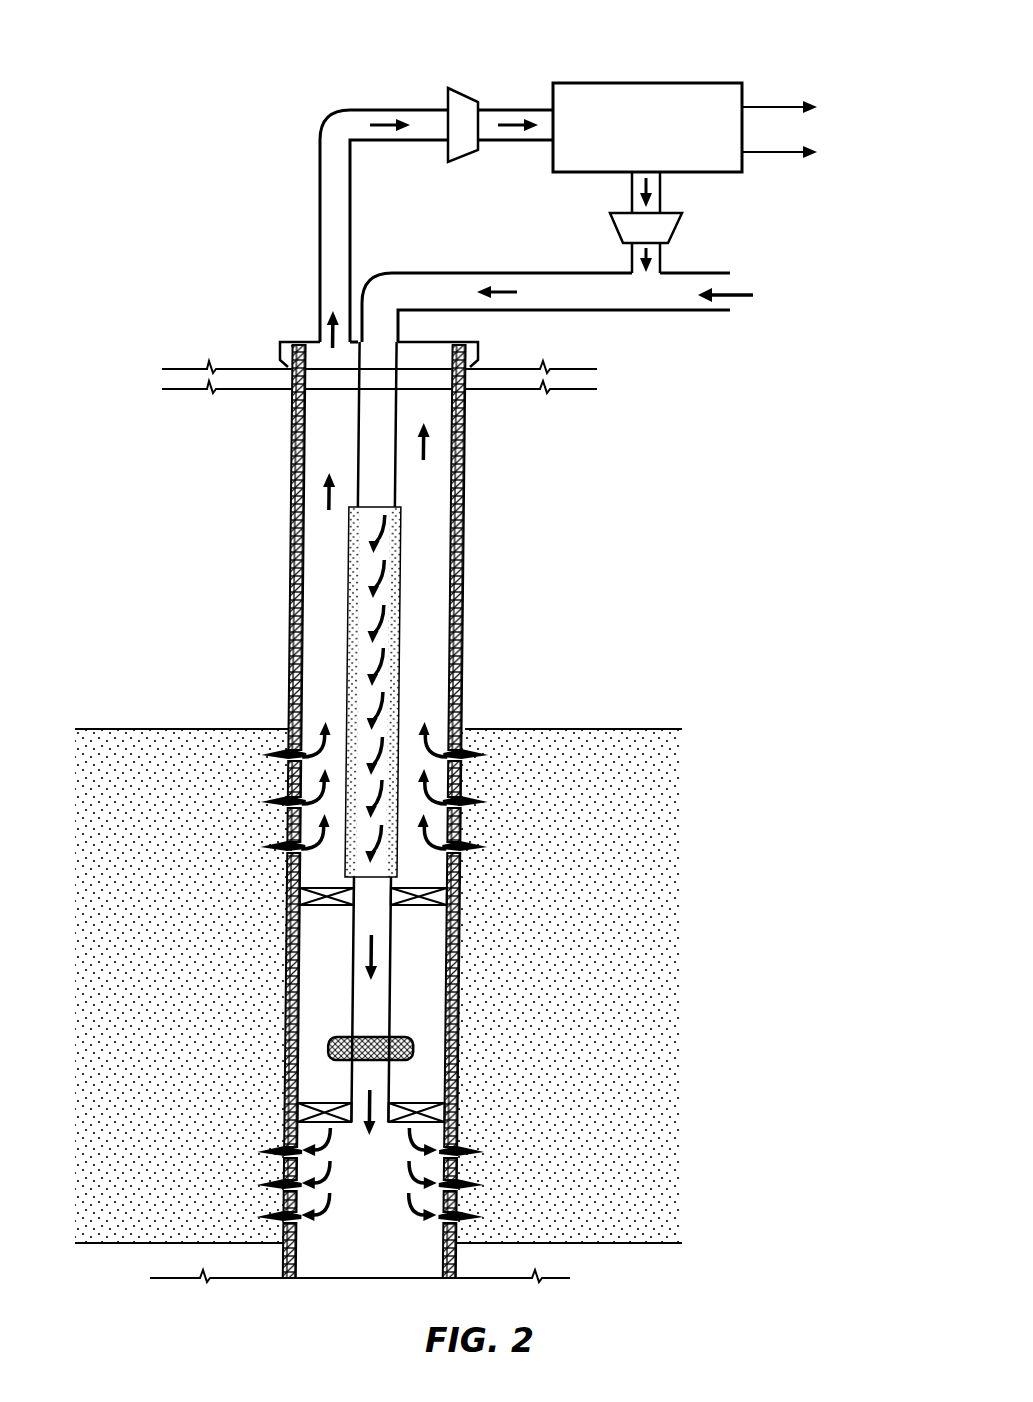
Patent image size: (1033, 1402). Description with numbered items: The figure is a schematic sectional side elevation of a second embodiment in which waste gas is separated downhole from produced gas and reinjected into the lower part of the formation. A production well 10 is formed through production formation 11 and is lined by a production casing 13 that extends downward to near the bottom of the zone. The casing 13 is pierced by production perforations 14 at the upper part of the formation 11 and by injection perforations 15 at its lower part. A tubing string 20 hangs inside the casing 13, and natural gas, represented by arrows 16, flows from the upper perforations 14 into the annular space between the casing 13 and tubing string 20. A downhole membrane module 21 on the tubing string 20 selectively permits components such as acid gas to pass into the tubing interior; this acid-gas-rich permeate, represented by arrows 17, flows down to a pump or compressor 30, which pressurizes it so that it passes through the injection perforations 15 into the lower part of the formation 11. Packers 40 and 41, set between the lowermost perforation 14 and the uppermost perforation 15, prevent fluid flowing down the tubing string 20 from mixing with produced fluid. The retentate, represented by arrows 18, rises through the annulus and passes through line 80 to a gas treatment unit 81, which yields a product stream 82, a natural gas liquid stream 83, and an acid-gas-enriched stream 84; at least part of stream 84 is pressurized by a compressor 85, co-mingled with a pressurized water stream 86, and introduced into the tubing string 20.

The production well 10 is at (483, 424).
The production formation 11 is at (566, 998).
The production casing 13 is at (292, 626).
The production perforations 14 is at (270, 845).
The injection perforations 15 is at (265, 1185).
The natural gas stream 16 is at (292, 760).
The waste gas permeate stream 17 is at (383, 620).
The retentate stream 18 is at (327, 498).
The tubing string 20 is at (359, 440).
The membrane module 21 is at (352, 552).
The pump or compressor 30 is at (329, 1048).
The packer 40 is at (300, 1105).
The uppermost packer 41 is at (305, 905).
The line 80 is at (320, 165).
The gas treatment unit 81 is at (689, 83).
The product stream 82 is at (746, 107).
The natural gas liquid stream 83 is at (746, 152).
The acid-gas-enriched stream 84 is at (660, 192).
The compressor 85 is at (682, 236).
The pressurized water stream 86 is at (741, 290).